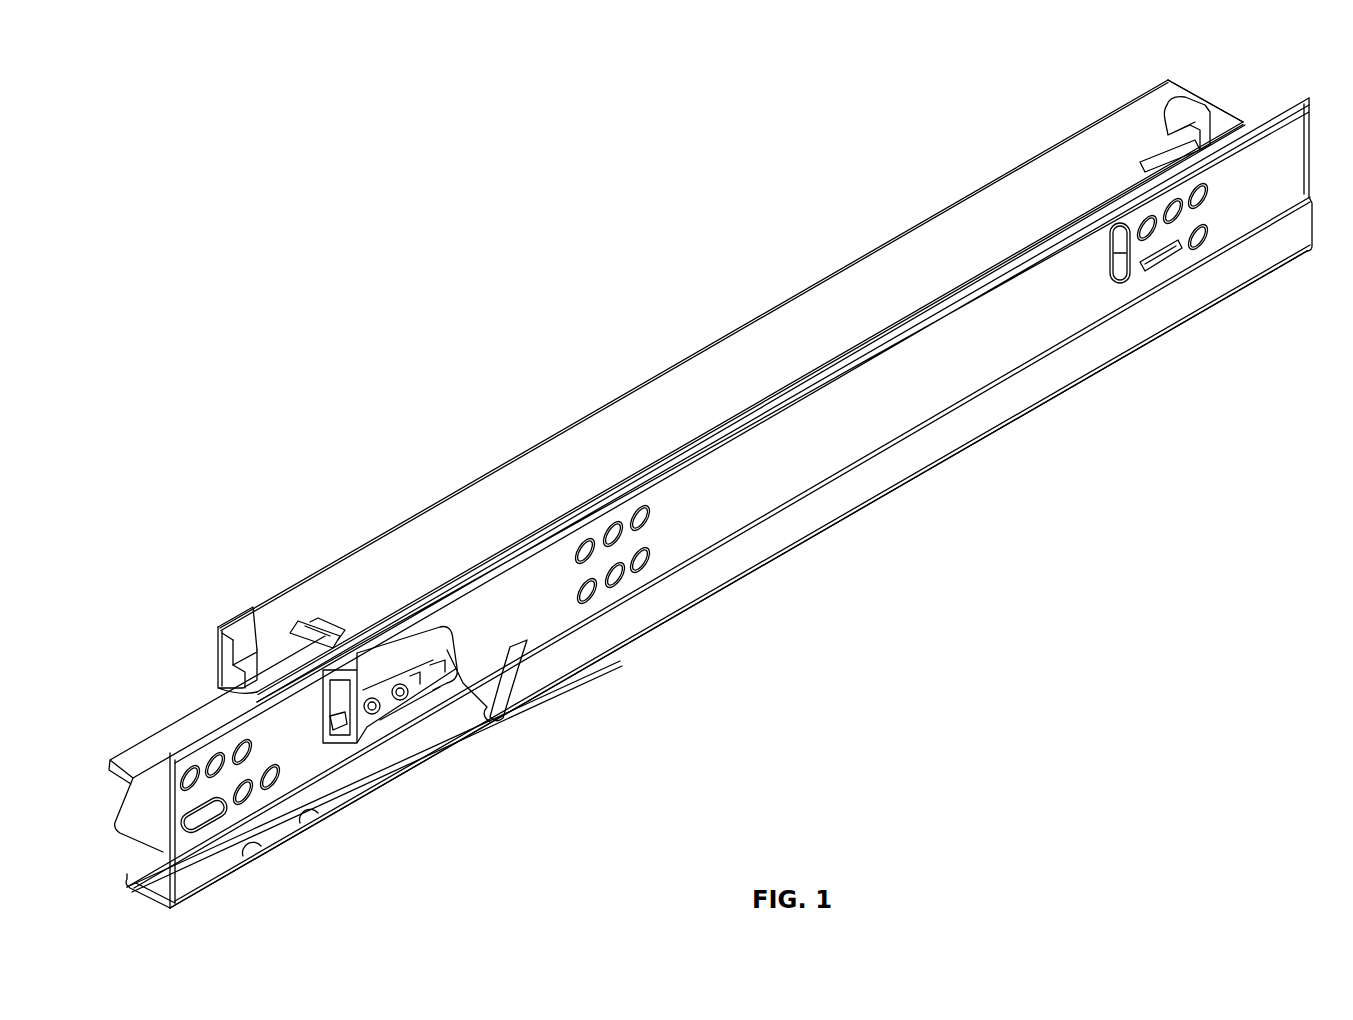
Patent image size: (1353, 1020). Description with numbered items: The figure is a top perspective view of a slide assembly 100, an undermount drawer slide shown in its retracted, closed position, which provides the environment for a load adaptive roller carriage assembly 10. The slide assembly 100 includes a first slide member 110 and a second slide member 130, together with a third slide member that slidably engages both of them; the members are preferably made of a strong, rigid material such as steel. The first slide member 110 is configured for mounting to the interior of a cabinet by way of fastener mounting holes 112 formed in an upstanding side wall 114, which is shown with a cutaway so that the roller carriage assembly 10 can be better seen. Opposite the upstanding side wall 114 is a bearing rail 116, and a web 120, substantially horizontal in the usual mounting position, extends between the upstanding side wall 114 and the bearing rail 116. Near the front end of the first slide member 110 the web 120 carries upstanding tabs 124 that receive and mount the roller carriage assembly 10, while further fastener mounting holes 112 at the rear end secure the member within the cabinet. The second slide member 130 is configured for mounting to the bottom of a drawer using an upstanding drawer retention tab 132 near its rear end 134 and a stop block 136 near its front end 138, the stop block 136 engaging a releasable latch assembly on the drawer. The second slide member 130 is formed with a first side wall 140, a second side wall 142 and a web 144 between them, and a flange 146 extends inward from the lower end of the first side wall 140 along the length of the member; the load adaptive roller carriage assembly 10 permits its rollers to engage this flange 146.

The load adaptive roller carriage assembly 10 is at (436, 716).
The slide assembly 100 is at (513, 430).
The first slide member 110 is at (720, 600).
The fastener mounting holes 112 is at (247, 764).
The upstanding side wall 114 is at (203, 870).
The bearing rail 116 is at (135, 757).
The web 120 is at (418, 740).
The upstanding tabs 124 is at (438, 670).
The second slide member 130 is at (362, 532).
The upstanding drawer retention tab 132 is at (1180, 100).
The rear end 134 is at (1233, 122).
The stop block 136 is at (282, 650).
The front end 138 is at (218, 640).
The first side wall 140 is at (398, 650).
The second side wall 142 is at (227, 667).
The web 144 is at (463, 510).
The flange 146 is at (333, 727).